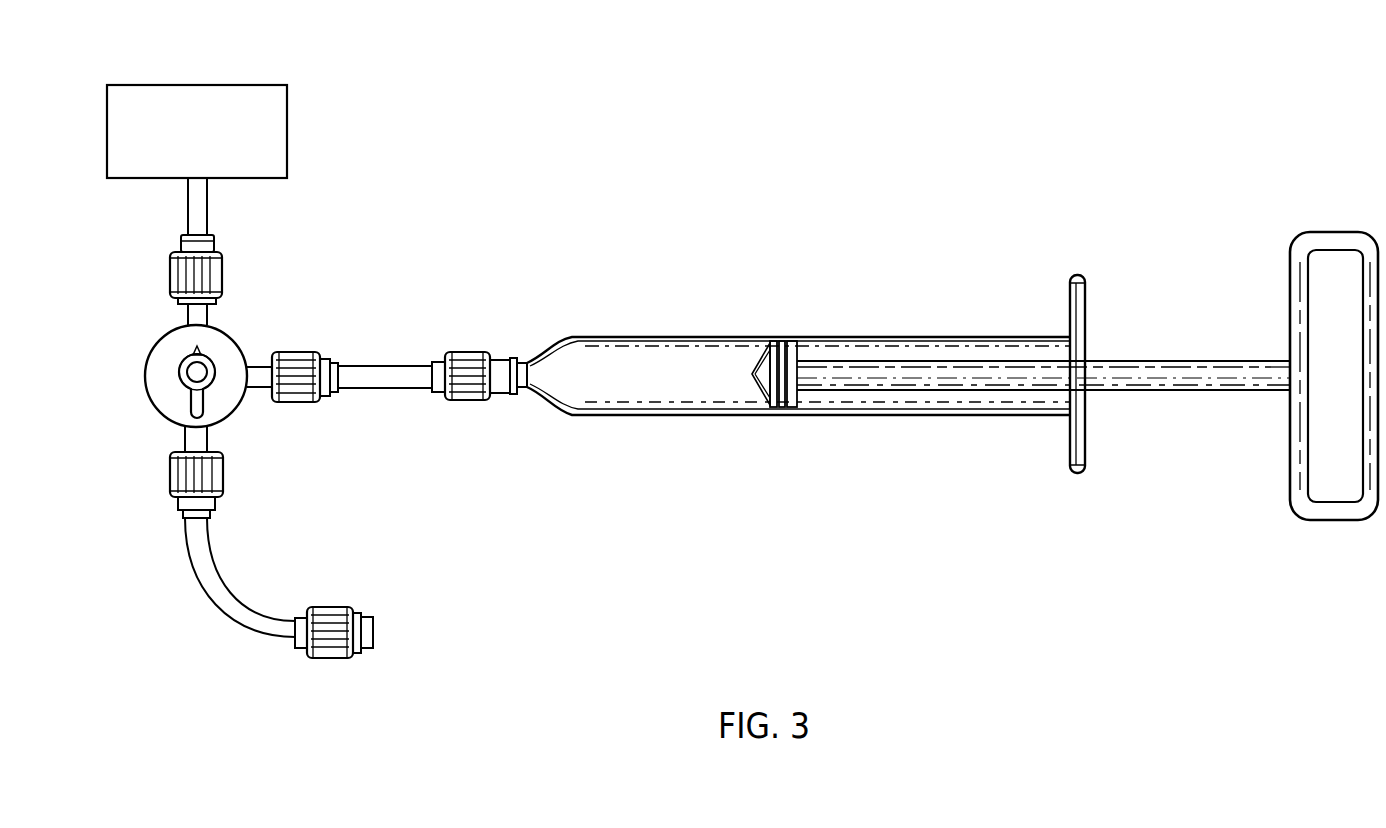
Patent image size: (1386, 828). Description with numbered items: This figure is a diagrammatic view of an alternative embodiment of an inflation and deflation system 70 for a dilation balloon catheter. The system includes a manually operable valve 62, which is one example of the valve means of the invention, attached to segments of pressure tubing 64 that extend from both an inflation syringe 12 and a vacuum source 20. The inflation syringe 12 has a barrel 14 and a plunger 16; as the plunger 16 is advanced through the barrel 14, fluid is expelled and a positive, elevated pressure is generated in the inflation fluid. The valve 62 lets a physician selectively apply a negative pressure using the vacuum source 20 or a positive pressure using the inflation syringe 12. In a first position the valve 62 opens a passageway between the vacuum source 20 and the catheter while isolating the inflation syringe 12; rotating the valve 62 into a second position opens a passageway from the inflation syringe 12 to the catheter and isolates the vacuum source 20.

The inflation syringe 12 is at (905, 376).
The barrel 14 is at (663, 352).
The plunger 16 is at (1128, 375).
The vacuum source 20 is at (125, 95).
The manually operable valve 62 is at (167, 353).
The pressure tubing 64 is at (355, 377).
The inflation and deflation system 70 is at (892, 157).